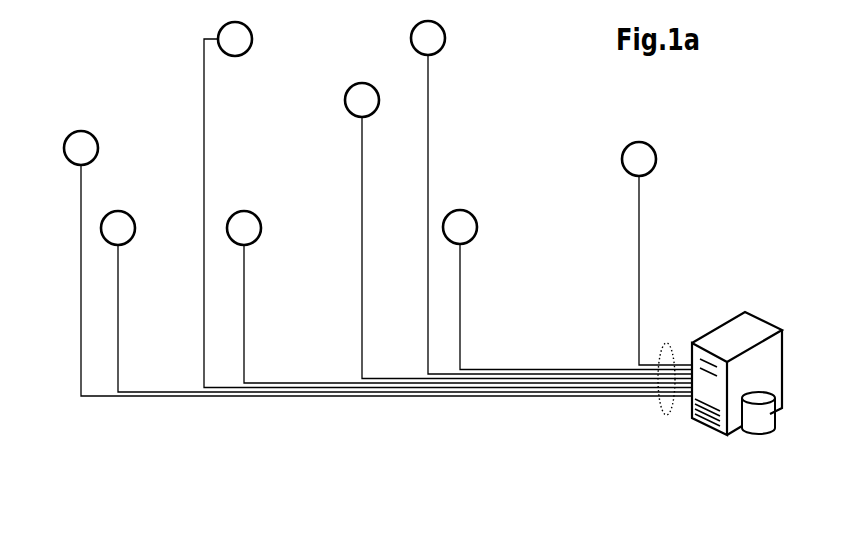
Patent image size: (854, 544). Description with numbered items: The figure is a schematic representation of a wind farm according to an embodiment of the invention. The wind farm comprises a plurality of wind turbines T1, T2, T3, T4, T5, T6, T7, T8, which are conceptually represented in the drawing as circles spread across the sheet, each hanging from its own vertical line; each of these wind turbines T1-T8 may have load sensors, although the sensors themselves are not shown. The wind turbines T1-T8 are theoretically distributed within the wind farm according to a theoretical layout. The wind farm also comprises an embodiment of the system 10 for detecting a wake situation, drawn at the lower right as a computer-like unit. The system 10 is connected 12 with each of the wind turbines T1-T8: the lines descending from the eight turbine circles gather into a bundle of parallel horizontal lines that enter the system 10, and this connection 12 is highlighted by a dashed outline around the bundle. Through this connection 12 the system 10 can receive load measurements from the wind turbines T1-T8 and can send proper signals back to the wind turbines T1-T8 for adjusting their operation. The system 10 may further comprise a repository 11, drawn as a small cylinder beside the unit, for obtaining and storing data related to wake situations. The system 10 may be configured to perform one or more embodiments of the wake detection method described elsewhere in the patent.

The wind turbine T1 is at (378, 252).
The wind turbine T2 is at (396, 291).
The wind turbine T3 is at (459, 287).
The wind turbine T4 is at (448, 194).
The wind turbine T5 is at (504, 231).
The wind turbine T6 is at (551, 195).
The wind turbine T7 is at (567, 290).
The wind turbine T8 is at (657, 242).
The system for detecting a wake situation 10 is at (728, 338).
The repository 11 is at (762, 418).
The connection 12 is at (658, 405).